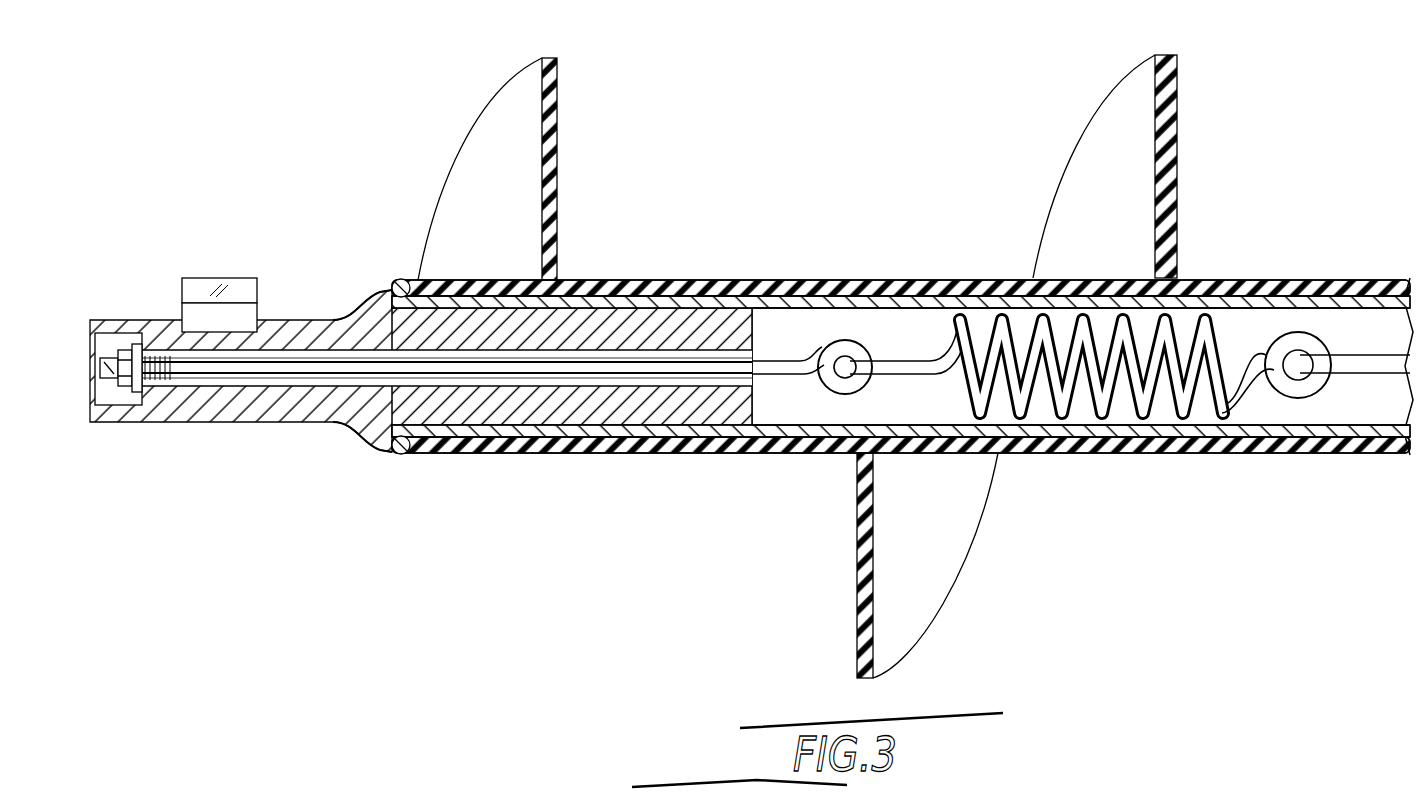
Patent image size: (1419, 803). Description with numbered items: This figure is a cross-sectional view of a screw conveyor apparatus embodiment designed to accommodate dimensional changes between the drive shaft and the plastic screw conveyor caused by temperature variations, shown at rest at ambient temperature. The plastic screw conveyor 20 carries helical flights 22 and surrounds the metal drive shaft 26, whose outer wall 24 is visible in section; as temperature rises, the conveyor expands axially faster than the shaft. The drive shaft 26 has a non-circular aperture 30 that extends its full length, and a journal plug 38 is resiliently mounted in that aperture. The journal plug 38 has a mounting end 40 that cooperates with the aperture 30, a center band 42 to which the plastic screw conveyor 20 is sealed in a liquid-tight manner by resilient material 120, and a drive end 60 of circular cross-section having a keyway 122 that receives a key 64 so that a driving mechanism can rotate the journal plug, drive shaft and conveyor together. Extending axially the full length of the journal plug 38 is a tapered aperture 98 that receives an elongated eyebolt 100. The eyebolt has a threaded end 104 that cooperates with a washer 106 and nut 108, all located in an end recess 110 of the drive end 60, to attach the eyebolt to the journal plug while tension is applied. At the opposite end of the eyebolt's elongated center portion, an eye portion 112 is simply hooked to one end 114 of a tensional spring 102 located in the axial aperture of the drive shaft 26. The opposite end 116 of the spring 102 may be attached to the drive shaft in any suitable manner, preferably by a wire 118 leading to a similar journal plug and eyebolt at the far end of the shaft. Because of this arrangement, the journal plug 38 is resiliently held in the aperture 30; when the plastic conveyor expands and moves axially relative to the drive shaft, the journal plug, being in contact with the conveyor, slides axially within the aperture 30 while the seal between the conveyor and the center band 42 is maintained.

The plastic screw conveyor 20 is at (692, 264).
The fin 22 is at (500, 90).
The tube outer wall 24 is at (823, 298).
The drive shaft 26 is at (865, 300).
The aperture 30 is at (795, 410).
The journal plug 38 is at (421, 366).
The mounting end 40 is at (612, 322).
The center band 42 is at (360, 290).
The drive end 60 is at (228, 405).
The key 64 is at (228, 282).
The tapered aperture 98 is at (667, 388).
The elongated eyebolt 100 is at (760, 335).
The tensional spring 102 is at (985, 445).
The threaded end 104 is at (145, 383).
The washer 106 is at (138, 343).
The nut 108 is at (122, 350).
The end recess 110 is at (95, 400).
The eye portion 112 is at (843, 338).
The end of spring 114 is at (903, 353).
The opposite end of spring 116 is at (1300, 330).
The wire 118 is at (1355, 352).
The resilient material 120 is at (397, 458).
The keyway 122 is at (248, 322).